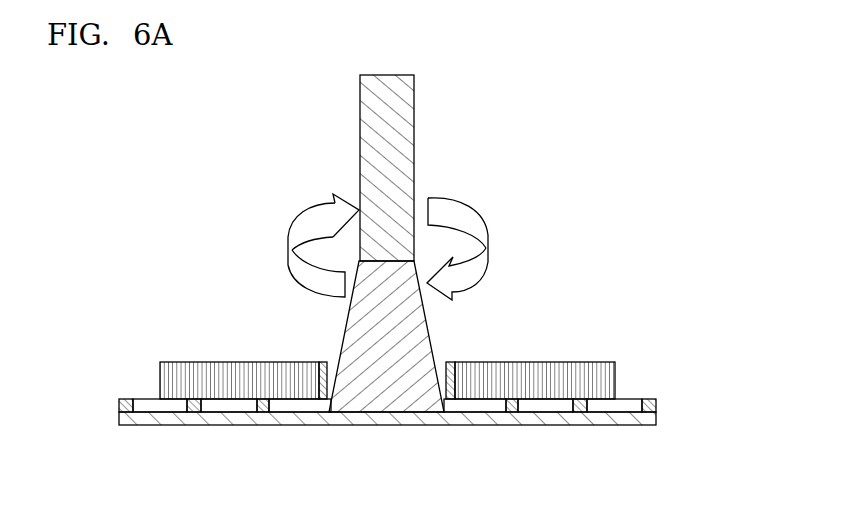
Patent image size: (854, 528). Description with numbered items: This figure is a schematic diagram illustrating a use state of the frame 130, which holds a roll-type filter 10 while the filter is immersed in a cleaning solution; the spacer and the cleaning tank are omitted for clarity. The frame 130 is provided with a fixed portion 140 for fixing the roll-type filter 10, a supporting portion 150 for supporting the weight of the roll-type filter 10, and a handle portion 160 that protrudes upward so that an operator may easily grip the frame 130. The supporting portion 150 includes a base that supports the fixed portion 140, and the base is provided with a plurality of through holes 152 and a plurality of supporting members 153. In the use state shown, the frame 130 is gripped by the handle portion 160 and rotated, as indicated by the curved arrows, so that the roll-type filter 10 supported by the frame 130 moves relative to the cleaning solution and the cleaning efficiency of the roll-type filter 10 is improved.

The roll-type filter 10 is at (590, 350).
The frame 130 is at (408, 243).
The fixed portion 140 is at (413, 342).
The supporting portion 150 is at (665, 411).
The through holes 152 is at (188, 415).
The supporting members 153 is at (123, 399).
The handle portion 160 is at (372, 103).